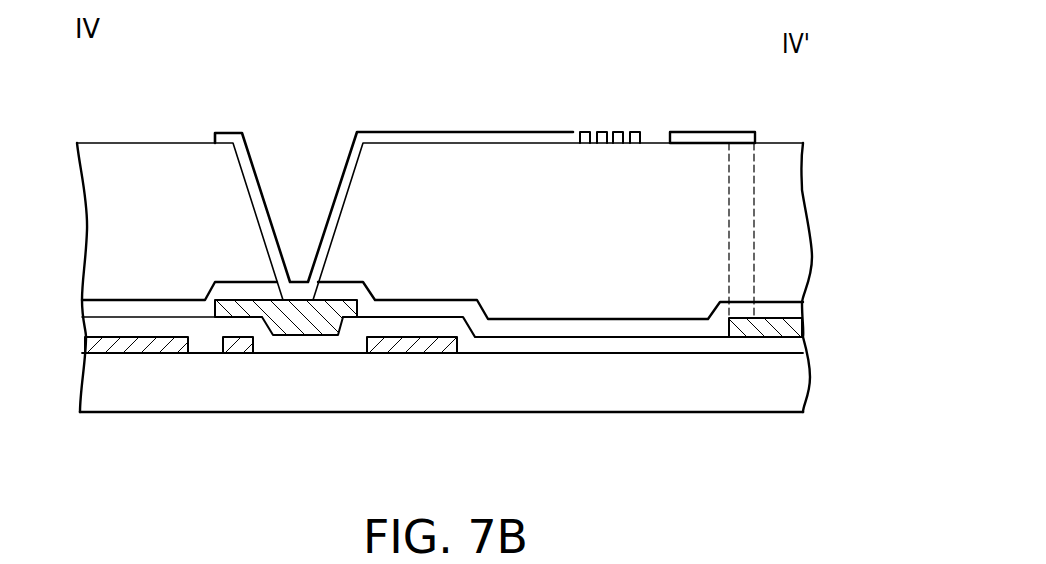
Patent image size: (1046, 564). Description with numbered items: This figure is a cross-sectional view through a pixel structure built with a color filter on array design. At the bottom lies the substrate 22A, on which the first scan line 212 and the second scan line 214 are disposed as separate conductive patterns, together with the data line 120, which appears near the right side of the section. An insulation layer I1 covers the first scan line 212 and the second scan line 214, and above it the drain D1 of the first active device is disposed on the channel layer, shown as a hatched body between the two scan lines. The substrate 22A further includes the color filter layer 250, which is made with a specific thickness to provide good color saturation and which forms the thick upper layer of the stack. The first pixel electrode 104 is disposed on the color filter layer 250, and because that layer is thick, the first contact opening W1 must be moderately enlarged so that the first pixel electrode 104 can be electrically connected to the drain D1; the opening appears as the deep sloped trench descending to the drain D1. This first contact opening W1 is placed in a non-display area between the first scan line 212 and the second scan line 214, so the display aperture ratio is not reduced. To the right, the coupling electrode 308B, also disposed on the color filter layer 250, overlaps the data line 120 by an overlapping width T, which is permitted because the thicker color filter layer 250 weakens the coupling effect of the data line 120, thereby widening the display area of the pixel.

The color filter layer 250 is at (480, 157).
The first pixel electrode 104 is at (548, 140).
The coupling electrode 308B is at (703, 138).
The first contact opening W1 is at (338, 207).
The overlapping width T is at (712, 258).
The first scan line 212 is at (183, 352).
The drain D1 is at (303, 330).
The second scan line 214 is at (407, 352).
The insulation layer I1 is at (567, 352).
The substrate 22A is at (667, 352).
The data line 120 is at (760, 330).